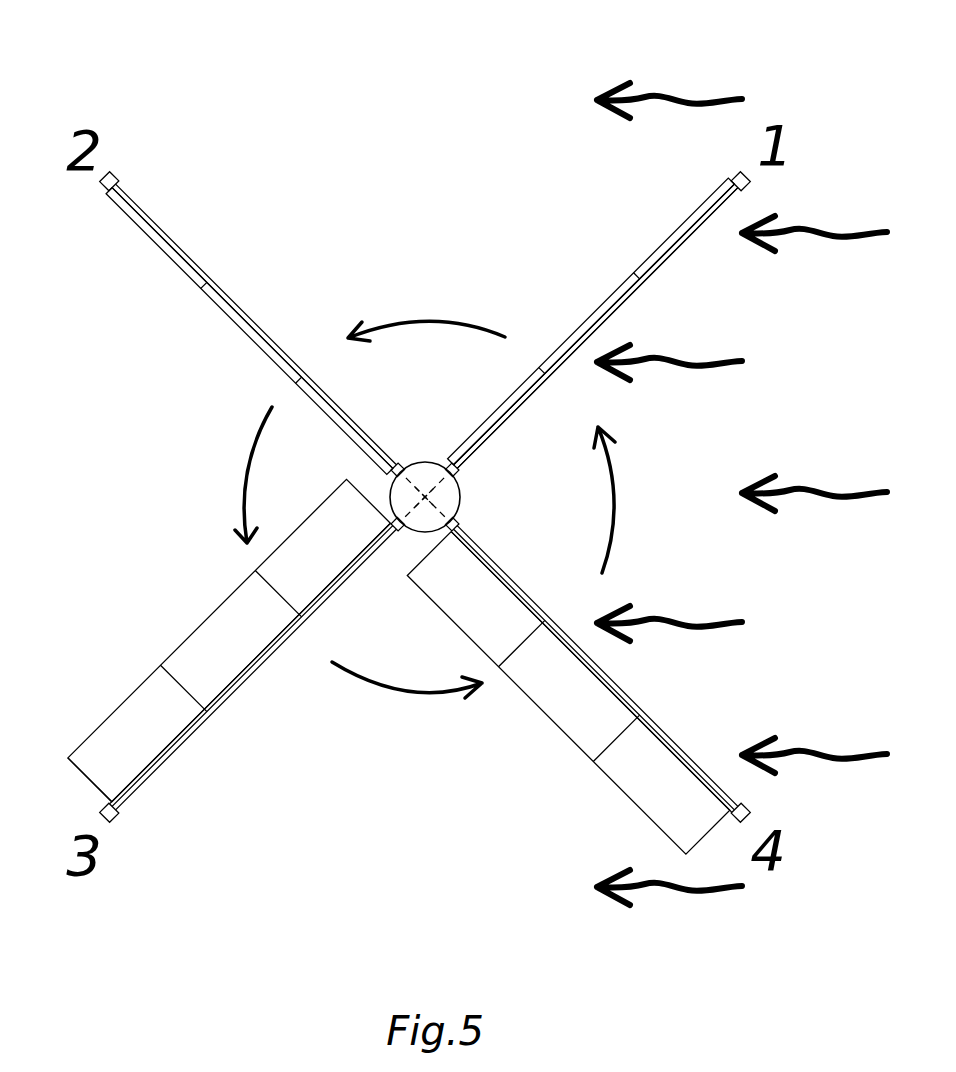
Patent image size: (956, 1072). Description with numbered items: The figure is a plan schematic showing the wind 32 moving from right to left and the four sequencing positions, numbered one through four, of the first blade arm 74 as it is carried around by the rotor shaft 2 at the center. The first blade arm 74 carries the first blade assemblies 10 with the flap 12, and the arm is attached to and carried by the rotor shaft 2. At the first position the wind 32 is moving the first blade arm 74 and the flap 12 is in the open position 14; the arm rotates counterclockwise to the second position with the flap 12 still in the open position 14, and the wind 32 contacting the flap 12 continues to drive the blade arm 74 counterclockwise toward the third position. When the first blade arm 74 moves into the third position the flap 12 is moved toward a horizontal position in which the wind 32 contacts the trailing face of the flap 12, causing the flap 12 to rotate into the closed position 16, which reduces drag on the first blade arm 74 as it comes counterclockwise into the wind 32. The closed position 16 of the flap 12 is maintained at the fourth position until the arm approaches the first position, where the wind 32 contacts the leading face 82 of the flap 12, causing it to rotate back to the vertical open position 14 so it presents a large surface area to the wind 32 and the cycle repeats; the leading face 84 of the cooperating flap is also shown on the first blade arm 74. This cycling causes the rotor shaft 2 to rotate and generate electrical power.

The rotor shaft 2 is at (418, 465).
The first blade assemblies 10 is at (667, 240).
The flap 12 is at (603, 310).
The open position 14 is at (143, 228).
The closed position 16 is at (143, 702).
The wind 32 is at (680, 96).
The first blade arm 74 is at (150, 208).
The leading face 82 is at (263, 322).
The leading face 84 is at (105, 738).